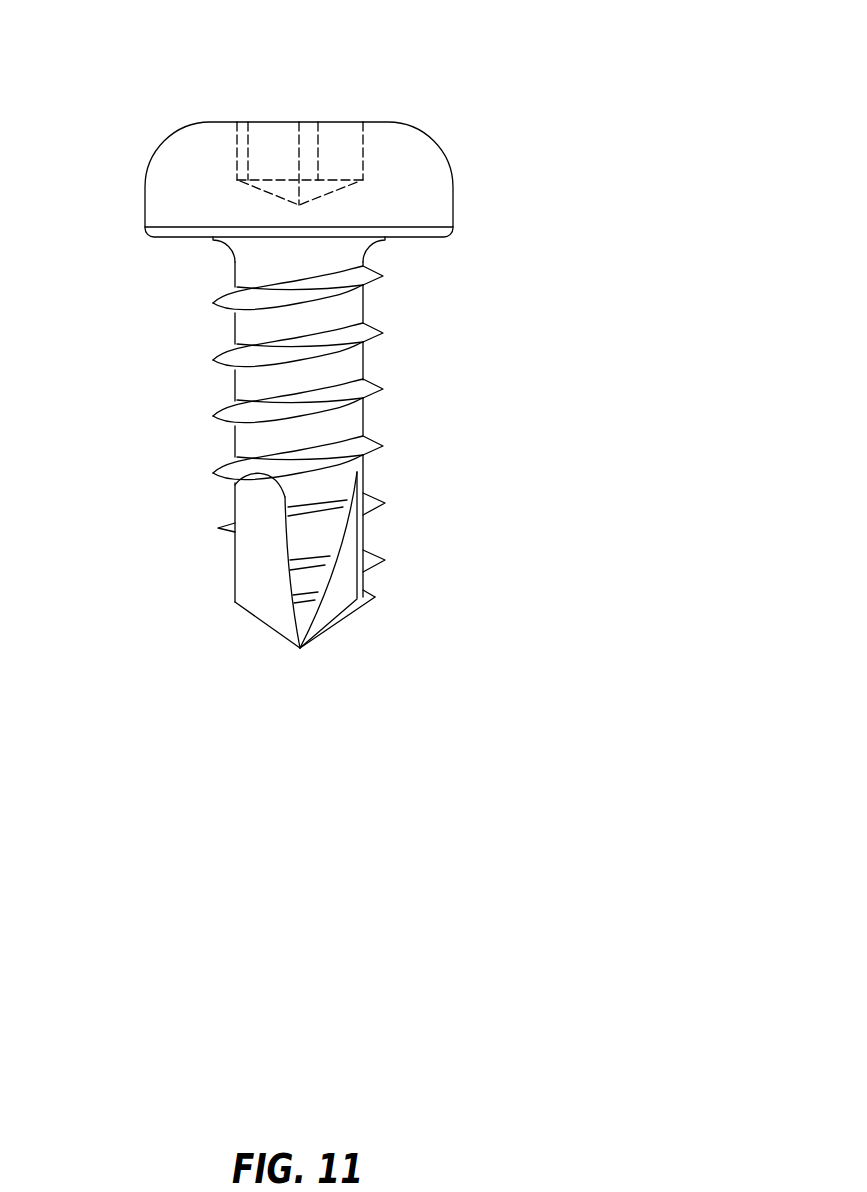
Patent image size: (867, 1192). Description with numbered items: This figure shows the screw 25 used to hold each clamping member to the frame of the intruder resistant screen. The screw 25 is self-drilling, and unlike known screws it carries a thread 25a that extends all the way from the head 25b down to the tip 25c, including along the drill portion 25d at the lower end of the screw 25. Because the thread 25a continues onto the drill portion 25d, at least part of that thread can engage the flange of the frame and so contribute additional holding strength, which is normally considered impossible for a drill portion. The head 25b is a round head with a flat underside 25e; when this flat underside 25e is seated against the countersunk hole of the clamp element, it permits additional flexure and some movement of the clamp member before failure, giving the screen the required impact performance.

The screw 25 is at (472, 78).
The thread 25a is at (383, 328).
The head 25b is at (453, 207).
The tip 25c is at (335, 630).
The drill portion 25d is at (235, 574).
The flat underside 25e is at (420, 239).